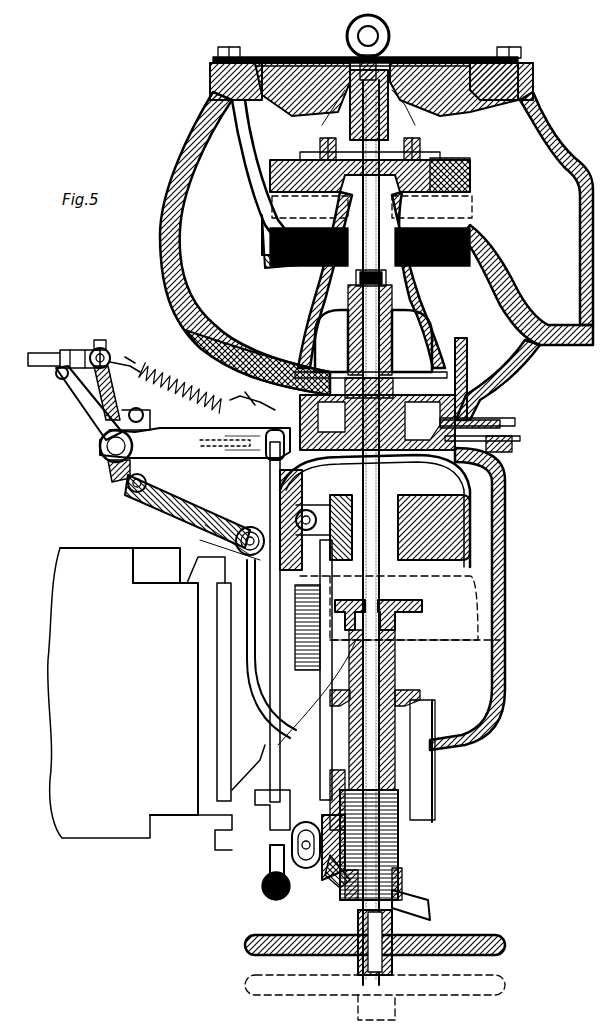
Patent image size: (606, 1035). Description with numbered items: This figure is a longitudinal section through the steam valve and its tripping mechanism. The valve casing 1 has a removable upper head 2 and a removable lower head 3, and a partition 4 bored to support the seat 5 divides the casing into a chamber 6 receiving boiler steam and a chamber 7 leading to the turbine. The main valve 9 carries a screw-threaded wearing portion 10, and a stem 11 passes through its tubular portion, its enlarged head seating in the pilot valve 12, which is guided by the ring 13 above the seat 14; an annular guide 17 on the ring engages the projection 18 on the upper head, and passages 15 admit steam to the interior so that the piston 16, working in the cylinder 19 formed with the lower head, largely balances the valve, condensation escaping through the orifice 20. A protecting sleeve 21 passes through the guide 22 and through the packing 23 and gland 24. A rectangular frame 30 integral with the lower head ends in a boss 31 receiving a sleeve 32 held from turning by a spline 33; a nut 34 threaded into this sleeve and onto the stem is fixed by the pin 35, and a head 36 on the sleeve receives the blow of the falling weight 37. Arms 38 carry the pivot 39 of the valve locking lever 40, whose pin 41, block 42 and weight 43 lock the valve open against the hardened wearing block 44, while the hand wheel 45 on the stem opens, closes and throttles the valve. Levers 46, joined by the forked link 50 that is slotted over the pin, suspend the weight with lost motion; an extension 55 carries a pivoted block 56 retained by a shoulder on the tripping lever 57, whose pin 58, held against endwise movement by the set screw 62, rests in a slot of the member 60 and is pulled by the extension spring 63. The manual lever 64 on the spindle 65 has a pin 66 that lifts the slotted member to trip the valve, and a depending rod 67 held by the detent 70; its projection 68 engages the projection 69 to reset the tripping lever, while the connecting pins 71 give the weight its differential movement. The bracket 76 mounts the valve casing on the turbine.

The valve casing 1 is at (190, 128).
The upper head 2 is at (420, 95).
The lower head 3 is at (513, 446).
The partition 4 is at (517, 270).
The seat 5 is at (470, 232).
The chamber 6 is at (501, 129).
The chamber 7 is at (272, 205).
The valve 9 is at (427, 295).
The wearing portion 10 is at (472, 178).
The stem 11 is at (381, 330).
The pilot valve 12 is at (352, 140).
The ring 13 is at (318, 148).
The seat 14 is at (372, 207).
The passages 15 is at (290, 152).
The piston 16 is at (468, 345).
The annular guide 17 is at (405, 112).
The projection 18 is at (358, 80).
The cylinder 19 is at (467, 375).
The orifice 20 is at (508, 418).
The sleeve 21 is at (350, 350).
The guide 22 is at (318, 300).
The packing 23 is at (412, 400).
The gland 24 is at (375, 510).
The frame 30 is at (507, 523).
The boss 31 is at (437, 770).
The sleeve 32 is at (400, 840).
The spline 33 is at (434, 822).
The nut 34 is at (402, 878).
The pin 35 is at (352, 898).
The head 36 is at (424, 612).
The weight 37 is at (458, 548).
The arms 38 is at (336, 882).
The pivot 39 is at (322, 860).
The valve locking lever 40 is at (292, 845).
The pin 41 is at (268, 860).
The block 42 is at (345, 760).
The weight 43 is at (430, 904).
The wearing block 44 is at (278, 812).
The hand wheel 45 is at (507, 945).
The levers 46 is at (330, 505).
The forked link 50 is at (322, 573).
The lever extension 55 is at (178, 508).
The pivoted block 56 is at (130, 492).
The tripping lever 57 is at (108, 470).
The pin 58 is at (103, 348).
The member 60 is at (80, 352).
The set screw 62 is at (98, 340).
The extension spring 63 is at (170, 372).
The lever 64 is at (100, 418).
The spindle 65 is at (100, 446).
The pin 66 is at (56, 376).
The rod 67 is at (280, 742).
The projection 68 is at (143, 414).
The projection 69 is at (118, 418).
The detent 70 is at (240, 787).
The connecting pins 71 is at (268, 500).
The bracket 76 is at (216, 648).